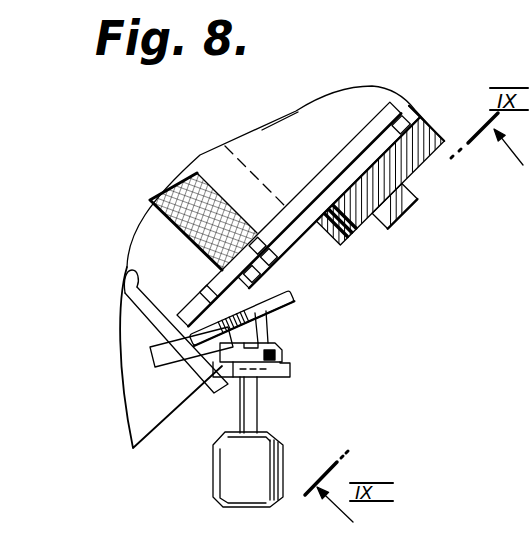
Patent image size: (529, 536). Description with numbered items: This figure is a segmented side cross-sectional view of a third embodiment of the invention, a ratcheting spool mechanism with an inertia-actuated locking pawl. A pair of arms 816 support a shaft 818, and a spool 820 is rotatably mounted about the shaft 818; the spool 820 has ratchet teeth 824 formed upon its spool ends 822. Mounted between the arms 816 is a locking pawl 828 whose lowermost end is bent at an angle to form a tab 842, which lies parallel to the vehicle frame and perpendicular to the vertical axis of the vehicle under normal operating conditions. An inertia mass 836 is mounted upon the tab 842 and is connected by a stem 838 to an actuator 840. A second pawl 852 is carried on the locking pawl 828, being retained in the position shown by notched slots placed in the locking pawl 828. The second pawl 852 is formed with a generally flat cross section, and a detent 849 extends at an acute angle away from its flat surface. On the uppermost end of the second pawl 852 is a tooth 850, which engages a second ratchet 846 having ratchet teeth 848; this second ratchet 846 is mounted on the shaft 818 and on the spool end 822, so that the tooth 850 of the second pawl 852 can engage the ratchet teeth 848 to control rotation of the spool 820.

The arms 816 is at (376, 174).
The shaft 818 is at (394, 205).
The spool 820 is at (220, 163).
The spool ends 822 is at (289, 214).
The ratchet teeth 824 is at (268, 124).
The locking pawl 828 is at (126, 272).
The inertia mass 836 is at (225, 481).
The stem 838 is at (247, 415).
The actuator 840 is at (285, 358).
The tab 842 is at (282, 378).
The second ratchet 846 is at (329, 197).
The ratchet teeth 848 is at (340, 220).
The detent 849 is at (228, 339).
The tooth 850 is at (298, 300).
The second pawl 852 is at (150, 360).